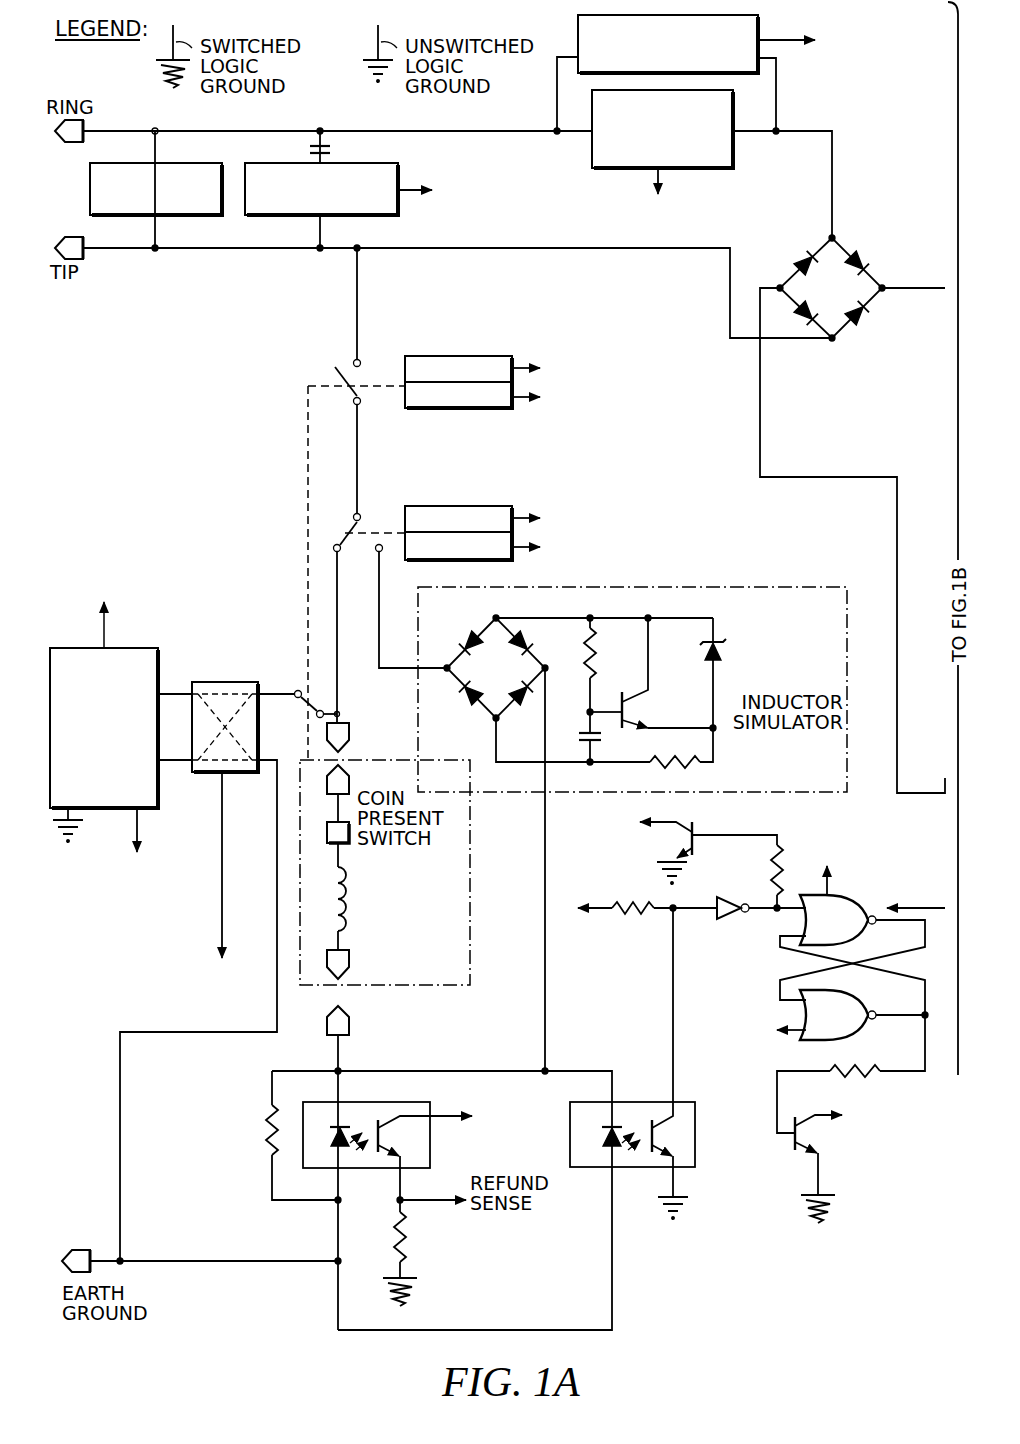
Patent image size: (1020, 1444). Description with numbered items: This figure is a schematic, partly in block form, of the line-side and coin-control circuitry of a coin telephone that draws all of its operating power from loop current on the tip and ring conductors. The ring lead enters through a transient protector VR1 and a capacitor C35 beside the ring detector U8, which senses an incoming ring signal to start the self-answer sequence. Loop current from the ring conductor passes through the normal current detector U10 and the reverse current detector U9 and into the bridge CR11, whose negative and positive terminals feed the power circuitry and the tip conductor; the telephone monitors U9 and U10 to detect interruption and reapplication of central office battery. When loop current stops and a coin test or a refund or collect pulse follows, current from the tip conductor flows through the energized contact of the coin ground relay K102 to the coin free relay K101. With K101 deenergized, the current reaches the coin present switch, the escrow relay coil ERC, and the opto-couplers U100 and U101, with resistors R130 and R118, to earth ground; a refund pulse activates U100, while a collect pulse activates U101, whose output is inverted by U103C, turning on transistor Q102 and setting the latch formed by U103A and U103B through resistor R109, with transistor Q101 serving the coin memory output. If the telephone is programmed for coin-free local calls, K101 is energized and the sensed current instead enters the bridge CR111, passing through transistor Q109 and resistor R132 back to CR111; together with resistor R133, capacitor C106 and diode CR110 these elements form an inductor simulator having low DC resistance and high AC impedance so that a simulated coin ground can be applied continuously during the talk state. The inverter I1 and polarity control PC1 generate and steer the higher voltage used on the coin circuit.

The transient protector VR1 is at (135, 189).
The capacitor C35 is at (339, 147).
The ring detector circuit U8 is at (377, 203).
The reverse current detector U9 is at (733, 73).
The normal current detector U10 is at (678, 147).
The bridge CR11 is at (848, 248).
The coin ground relay K102 is at (539, 344).
The coin free relay K101 is at (539, 495).
The bridge CR111 is at (519, 678).
The resistor R133 is at (616, 665).
The transistor Q109 is at (651, 673).
The capacitor C106 is at (616, 737).
The resistor R132 is at (604, 753).
The zener diode CR110 is at (726, 638).
The 6V to 130V inverter I1 is at (143, 648).
The polarity control PC1 is at (238, 772).
The escrow relay coil ERC is at (389, 896).
The resistor R130 is at (279, 1135).
The opto-coupler U100 is at (390, 1146).
The resistor R118 is at (422, 1253).
The opto-coupler U101 is at (632, 1063).
The transistor Q102 is at (663, 840).
The resistor R109 is at (637, 920).
The inverter circuit U103C is at (752, 921).
The latch gate U103A is at (864, 930).
The latch gate U103B is at (811, 1022).
The transistor Q101 is at (846, 1147).